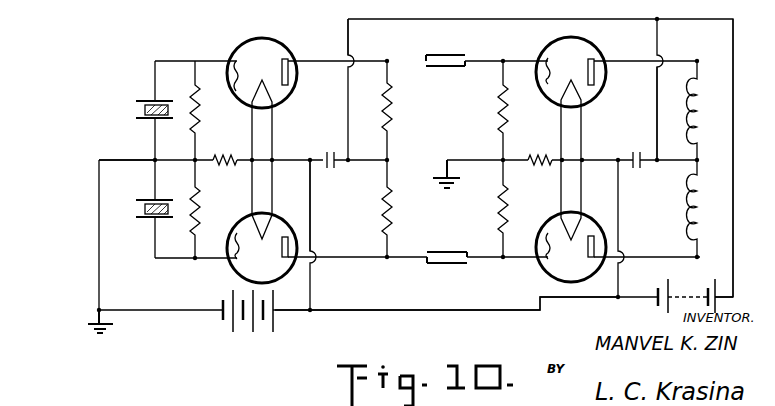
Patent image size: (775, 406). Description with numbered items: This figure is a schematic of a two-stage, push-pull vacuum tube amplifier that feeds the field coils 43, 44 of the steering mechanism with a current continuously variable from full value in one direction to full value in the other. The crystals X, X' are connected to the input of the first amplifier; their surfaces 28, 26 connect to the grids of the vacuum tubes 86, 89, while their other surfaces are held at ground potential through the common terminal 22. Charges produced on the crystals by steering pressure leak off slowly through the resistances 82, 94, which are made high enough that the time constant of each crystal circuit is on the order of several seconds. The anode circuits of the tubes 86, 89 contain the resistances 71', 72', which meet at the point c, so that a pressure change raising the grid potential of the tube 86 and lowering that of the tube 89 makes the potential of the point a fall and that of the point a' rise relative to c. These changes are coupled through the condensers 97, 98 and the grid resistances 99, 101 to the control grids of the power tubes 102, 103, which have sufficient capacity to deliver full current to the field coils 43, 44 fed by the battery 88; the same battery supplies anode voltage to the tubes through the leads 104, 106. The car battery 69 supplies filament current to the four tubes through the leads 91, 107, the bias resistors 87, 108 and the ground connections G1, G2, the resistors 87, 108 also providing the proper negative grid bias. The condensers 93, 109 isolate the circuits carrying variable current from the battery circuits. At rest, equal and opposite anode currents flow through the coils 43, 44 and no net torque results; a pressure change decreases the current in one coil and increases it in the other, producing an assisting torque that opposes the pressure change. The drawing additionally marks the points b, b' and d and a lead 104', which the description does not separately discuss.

The vacuum tube 86 is at (262, 128).
The vacuum tube 89 is at (233, 272).
The vacuum tube 102 is at (571, 129).
The vacuum tube 103 is at (586, 221).
The resistance 82 is at (205, 110).
The resistance 94 is at (205, 209).
The bias resistor 87 is at (225, 150).
The resistance 71' is at (401, 110).
The resistance 72' is at (401, 208).
The grid resistance 99 is at (513, 110).
The grid resistance 101 is at (517, 208).
The bias resistor 108 is at (542, 149).
The condenser 93 is at (331, 149).
The condenser 109 is at (641, 150).
The condenser 97 is at (445, 51).
The condenser 98 is at (447, 248).
The surface of crystal x 28 is at (148, 102).
The surface of crystal x' 26 is at (153, 219).
The crystal X is at (138, 111).
The crystal X' is at (138, 210).
The common terminal 22 is at (127, 150).
The point a is at (388, 53).
The point a' is at (391, 266).
The terminal b is at (703, 58).
The terminal b' is at (705, 252).
The point c is at (392, 159).
The terminal d is at (703, 159).
The lead 104 is at (333, 64).
The conductor 104' is at (749, 158).
The lead 91 is at (320, 205).
The lead 106 is at (643, 113).
The lead 107 is at (628, 216).
The field coil 43 is at (707, 110).
The field coil 44 is at (707, 208).
The ground connection G1 is at (100, 334).
The ground connection G2 is at (447, 186).
The car battery 69 is at (248, 317).
The battery 88 is at (688, 292).